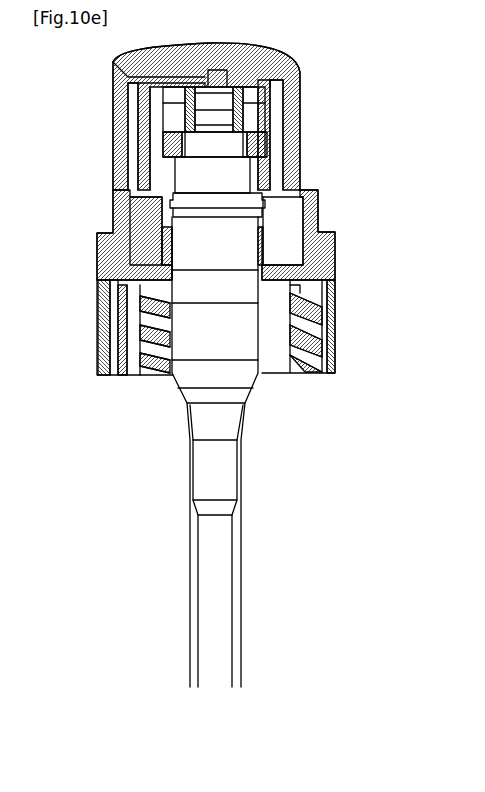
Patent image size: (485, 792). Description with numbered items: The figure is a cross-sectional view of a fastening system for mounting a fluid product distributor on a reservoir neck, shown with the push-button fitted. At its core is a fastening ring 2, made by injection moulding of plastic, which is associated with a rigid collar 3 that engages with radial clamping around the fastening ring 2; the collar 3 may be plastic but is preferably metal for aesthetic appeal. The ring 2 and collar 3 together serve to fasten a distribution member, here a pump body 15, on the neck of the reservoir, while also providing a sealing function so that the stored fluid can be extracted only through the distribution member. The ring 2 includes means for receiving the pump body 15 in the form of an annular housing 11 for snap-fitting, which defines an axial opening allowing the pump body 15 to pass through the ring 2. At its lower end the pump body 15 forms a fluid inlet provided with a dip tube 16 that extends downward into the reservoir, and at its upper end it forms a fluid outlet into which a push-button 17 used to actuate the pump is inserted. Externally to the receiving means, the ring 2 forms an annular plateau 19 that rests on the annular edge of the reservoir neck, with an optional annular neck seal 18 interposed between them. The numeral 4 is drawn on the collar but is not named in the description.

The push-button 17 is at (288, 103).
The pump body 15 is at (207, 183).
The fastening ring 2 is at (318, 202).
The annular housing 11 is at (273, 262).
The rigid collar 3 is at (330, 300).
The thread 4 is at (330, 328).
The annular plateau 19 is at (153, 282).
The annular neck seal 18 is at (135, 288).
The dip tube 16 is at (220, 582).